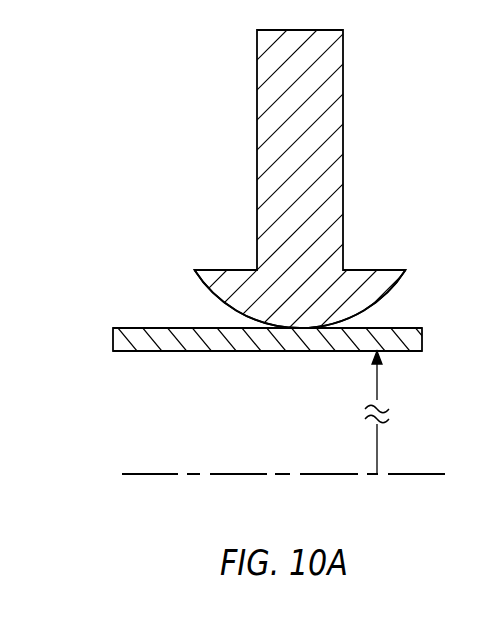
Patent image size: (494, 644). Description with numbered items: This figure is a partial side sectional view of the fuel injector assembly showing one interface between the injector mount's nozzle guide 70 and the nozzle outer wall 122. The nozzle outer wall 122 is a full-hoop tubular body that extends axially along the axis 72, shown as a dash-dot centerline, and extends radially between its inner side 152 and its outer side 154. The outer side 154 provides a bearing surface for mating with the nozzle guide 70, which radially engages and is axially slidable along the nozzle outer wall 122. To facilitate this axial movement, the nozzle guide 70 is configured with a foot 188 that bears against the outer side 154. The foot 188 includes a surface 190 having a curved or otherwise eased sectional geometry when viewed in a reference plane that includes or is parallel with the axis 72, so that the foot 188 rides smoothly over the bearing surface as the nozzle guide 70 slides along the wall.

The nozzle guide 70 is at (357, 120).
The foot 188 is at (382, 312).
The nozzle outer wall 122 is at (106, 340).
The outer side of the nozzle outer wall 154 is at (138, 328).
The inner side of the nozzle outer wall 152 is at (138, 351).
The surface of the foot 190 is at (300, 328).
The axis 72 is at (440, 476).